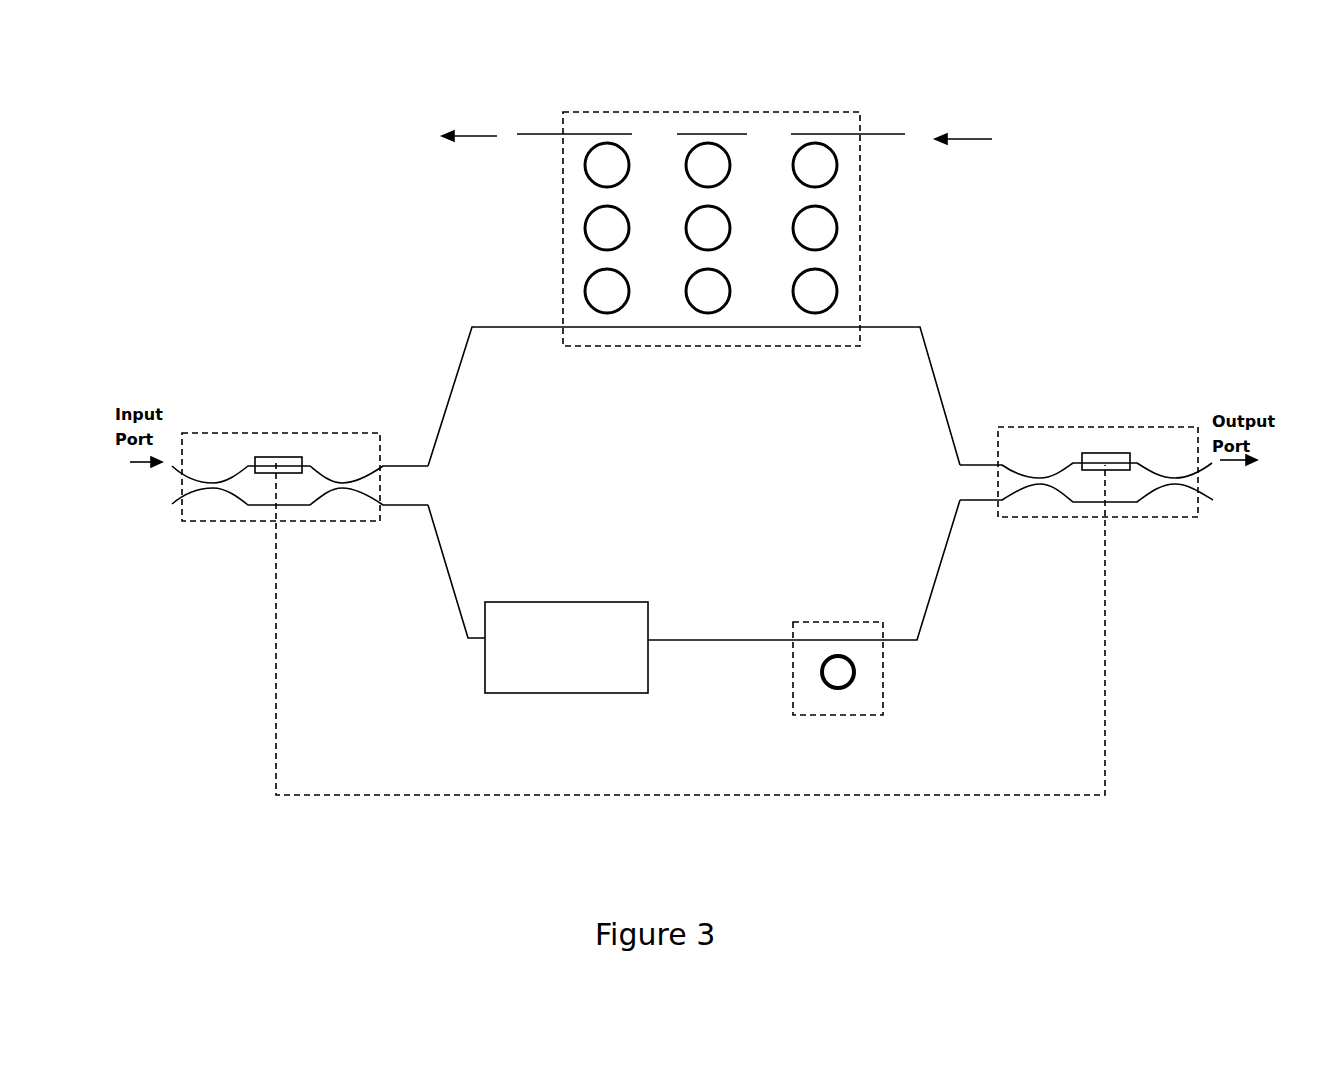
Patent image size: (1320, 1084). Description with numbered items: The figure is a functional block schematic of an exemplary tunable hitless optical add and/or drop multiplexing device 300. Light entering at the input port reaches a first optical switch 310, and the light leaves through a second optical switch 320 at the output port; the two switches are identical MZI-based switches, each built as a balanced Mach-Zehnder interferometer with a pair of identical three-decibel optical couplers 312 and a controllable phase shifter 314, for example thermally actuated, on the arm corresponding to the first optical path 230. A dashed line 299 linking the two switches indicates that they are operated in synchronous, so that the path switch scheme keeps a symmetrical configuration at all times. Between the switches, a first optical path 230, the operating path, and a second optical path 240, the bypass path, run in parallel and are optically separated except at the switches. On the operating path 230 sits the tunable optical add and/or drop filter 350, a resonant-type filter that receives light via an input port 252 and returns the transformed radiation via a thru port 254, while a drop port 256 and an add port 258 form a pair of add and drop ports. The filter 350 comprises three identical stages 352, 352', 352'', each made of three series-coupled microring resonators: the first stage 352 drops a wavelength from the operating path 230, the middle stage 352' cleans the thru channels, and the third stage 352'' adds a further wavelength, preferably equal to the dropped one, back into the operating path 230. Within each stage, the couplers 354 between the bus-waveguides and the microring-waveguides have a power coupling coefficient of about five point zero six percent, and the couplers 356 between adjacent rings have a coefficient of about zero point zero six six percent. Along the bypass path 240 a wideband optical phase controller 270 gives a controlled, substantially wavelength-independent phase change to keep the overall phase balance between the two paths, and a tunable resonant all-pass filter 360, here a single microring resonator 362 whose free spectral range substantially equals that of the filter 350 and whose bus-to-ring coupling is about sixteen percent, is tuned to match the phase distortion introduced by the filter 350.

The tunable hitless optical add and/or drop multiplexing device 300 is at (380, 225).
The dashed line 299 is at (895, 795).
The first optical switch 310 is at (690, 493).
The 3-dB optical couplers 312 is at (347, 488).
The controllable phase shifter 314 is at (287, 458).
The second optical switch 320 is at (1053, 440).
The first optical path 230 is at (455, 350).
The second optical path 240 is at (442, 552).
The wideband optical phase controller 270 is at (590, 693).
The tunable resonant all-pass filter 360 is at (858, 684).
The microring resonator 362 is at (820, 667).
The tunable optical add and/or drop filter 350 is at (702, 239).
The first stage 352 is at (634, 286).
The middle stage 352' is at (716, 281).
The third stage 352'' is at (799, 286).
The couplers between bus-waveguides and microring-waveguides 354 is at (605, 137).
The couplers between adjacent rings 356 is at (605, 262).
The input port 252 is at (557, 318).
The thru port 254 is at (858, 327).
The drop port 256 is at (560, 130).
The add port 258 is at (862, 140).